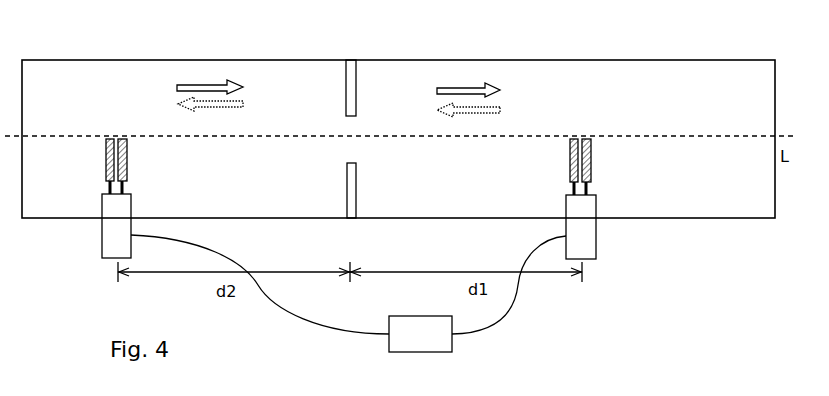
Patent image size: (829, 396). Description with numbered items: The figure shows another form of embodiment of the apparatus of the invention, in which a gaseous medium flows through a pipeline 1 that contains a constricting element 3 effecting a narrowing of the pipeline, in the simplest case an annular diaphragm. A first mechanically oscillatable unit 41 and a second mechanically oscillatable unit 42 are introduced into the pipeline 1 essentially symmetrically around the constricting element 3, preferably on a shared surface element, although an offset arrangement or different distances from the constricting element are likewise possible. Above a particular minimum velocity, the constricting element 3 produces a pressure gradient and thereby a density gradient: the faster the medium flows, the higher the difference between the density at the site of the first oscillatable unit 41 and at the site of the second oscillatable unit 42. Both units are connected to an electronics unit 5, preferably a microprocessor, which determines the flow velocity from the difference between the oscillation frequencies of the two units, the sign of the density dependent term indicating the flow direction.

The pipeline 1 is at (398, 109).
The constricting element 3 is at (336, 137).
The electronics unit 5 is at (427, 344).
The first mechanically oscillatable unit 41 is at (606, 210).
The second mechanically oscillatable unit 42 is at (91, 211).